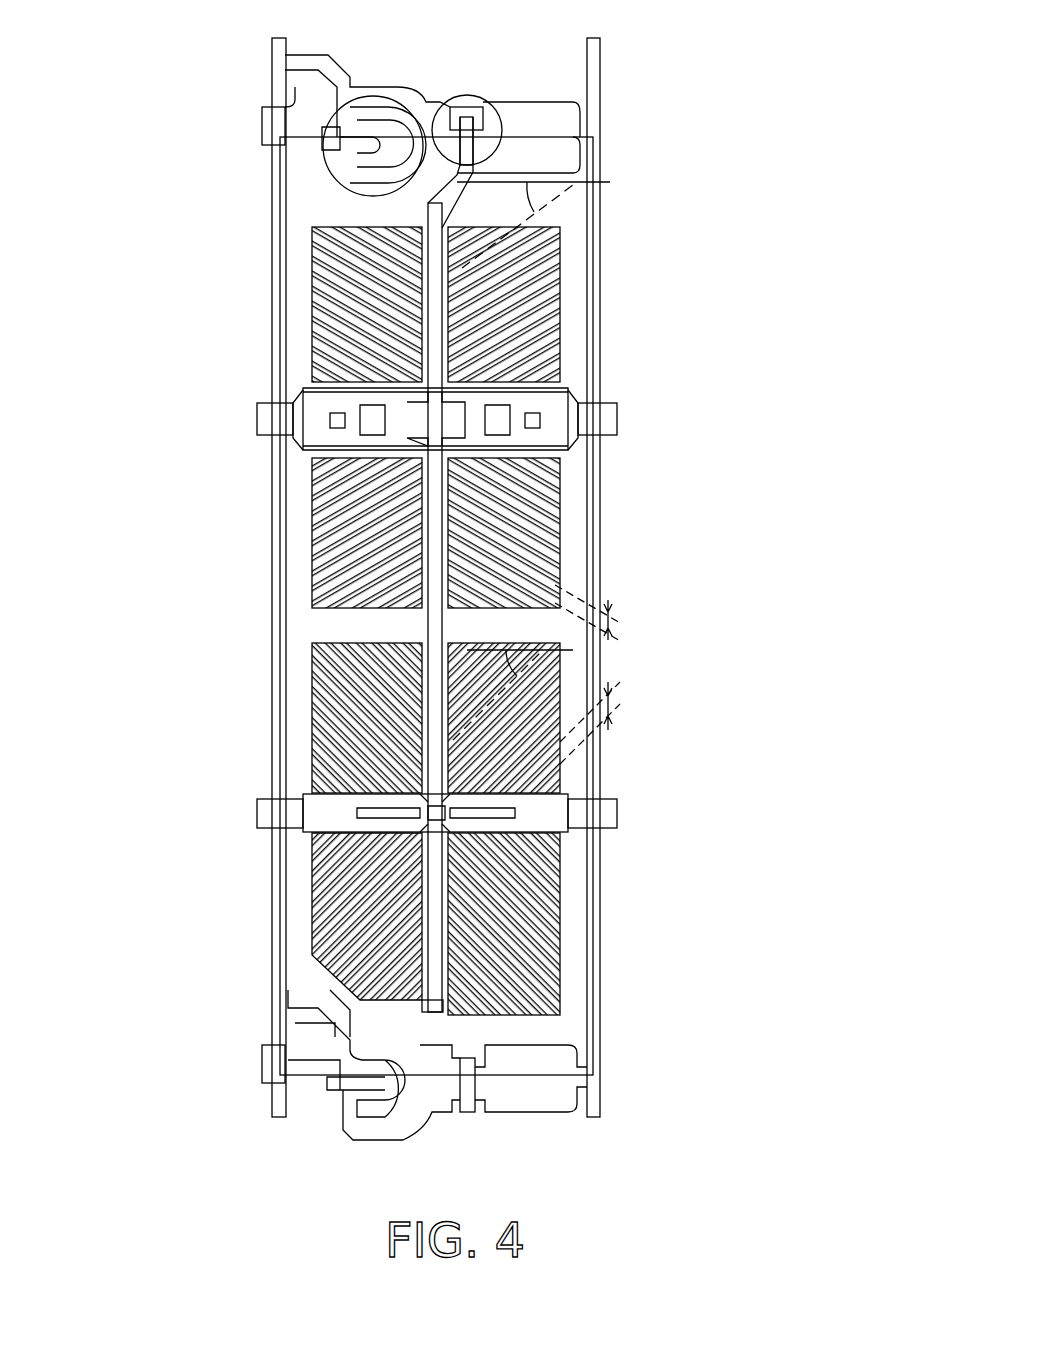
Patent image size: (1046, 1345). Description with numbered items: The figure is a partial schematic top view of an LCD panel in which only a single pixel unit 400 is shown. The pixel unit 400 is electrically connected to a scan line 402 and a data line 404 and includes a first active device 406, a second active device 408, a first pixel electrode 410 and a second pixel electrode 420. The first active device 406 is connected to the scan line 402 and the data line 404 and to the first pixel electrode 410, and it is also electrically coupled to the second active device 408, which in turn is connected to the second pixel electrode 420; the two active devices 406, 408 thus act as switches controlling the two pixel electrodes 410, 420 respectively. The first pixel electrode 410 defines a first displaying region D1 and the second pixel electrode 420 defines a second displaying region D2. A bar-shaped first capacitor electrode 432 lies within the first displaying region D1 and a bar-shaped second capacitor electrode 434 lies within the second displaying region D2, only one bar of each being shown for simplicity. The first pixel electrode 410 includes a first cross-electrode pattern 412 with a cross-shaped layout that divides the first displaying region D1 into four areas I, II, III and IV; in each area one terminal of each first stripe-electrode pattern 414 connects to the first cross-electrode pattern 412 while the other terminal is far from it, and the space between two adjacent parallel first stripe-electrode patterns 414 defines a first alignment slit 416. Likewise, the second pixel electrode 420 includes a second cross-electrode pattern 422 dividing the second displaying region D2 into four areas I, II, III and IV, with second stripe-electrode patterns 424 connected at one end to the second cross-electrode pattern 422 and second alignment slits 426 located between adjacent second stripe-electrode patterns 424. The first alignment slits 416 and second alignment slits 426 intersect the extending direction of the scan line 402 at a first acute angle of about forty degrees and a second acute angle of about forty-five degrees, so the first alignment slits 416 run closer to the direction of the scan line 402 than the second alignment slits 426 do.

The pixel unit 400 is at (795, 1153).
The scan line 402 is at (540, 116).
The data line 404 is at (275, 172).
The first active device 406 is at (378, 97).
The second active device 408 is at (468, 96).
The first pixel electrode 410 is at (700, 465).
The first cross-electrode pattern 412 is at (453, 510).
The first stripe-electrode patterns 414 is at (520, 488).
The first alignment slits 416 is at (612, 620).
The second pixel electrode 420 is at (718, 870).
The second cross-electrode pattern 422 is at (448, 930).
The second stripe-electrode patterns 424 is at (537, 888).
The second alignment slits 426 is at (612, 700).
The first capacitor electrode 432 is at (617, 418).
The second capacitor electrode 434 is at (617, 812).
The first displaying region D1 is at (148, 160).
The second displaying region D2 is at (151, 636).
The area I is at (480, 288).
The area II is at (367, 328).
The area III is at (340, 530).
The area IV is at (490, 492).